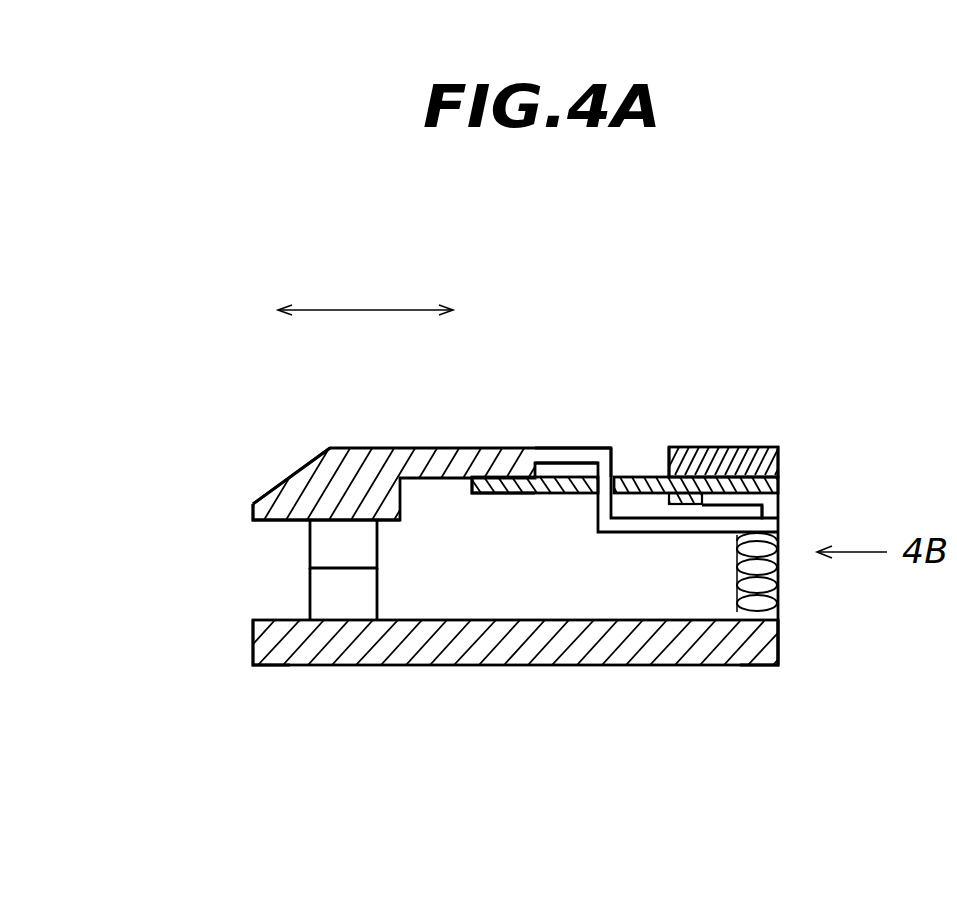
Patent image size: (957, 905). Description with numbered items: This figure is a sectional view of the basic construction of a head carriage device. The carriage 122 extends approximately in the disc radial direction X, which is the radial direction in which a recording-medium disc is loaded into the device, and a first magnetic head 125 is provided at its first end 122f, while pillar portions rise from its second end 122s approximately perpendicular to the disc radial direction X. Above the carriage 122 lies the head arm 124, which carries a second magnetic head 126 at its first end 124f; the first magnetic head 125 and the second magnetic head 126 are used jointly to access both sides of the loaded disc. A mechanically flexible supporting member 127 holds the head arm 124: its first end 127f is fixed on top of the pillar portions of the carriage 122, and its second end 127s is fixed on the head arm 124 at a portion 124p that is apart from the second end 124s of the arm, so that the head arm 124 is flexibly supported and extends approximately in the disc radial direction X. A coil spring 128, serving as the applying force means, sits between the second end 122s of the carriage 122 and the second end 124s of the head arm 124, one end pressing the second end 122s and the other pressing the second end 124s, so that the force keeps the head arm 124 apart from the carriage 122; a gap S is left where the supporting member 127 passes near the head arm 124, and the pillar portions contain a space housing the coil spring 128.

The carriage 122 is at (542, 640).
The first end of the carriage 122f is at (265, 653).
The second end of the carriage 122s is at (770, 647).
The head arm 124 is at (425, 460).
The first end of the head arm 124f is at (270, 493).
The portion of the head arm 124p is at (518, 470).
The second end of the head arm 124s is at (776, 511).
The first magnetic head 125 is at (317, 590).
The second magnetic head 126 is at (323, 552).
The supporting member 127 is at (628, 477).
The first end of the supporting member 127f is at (780, 478).
The second end of the supporting member 127s is at (481, 497).
The coil spring 128 is at (733, 578).
The gap S is at (668, 470).
The disc radial direction X is at (365, 290).